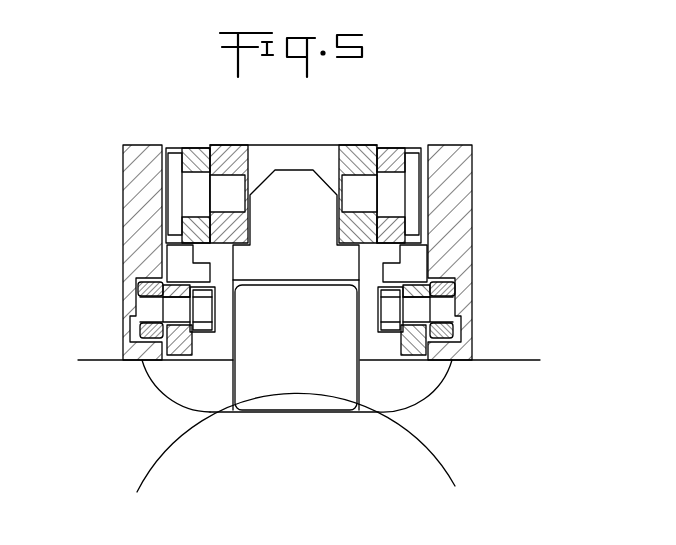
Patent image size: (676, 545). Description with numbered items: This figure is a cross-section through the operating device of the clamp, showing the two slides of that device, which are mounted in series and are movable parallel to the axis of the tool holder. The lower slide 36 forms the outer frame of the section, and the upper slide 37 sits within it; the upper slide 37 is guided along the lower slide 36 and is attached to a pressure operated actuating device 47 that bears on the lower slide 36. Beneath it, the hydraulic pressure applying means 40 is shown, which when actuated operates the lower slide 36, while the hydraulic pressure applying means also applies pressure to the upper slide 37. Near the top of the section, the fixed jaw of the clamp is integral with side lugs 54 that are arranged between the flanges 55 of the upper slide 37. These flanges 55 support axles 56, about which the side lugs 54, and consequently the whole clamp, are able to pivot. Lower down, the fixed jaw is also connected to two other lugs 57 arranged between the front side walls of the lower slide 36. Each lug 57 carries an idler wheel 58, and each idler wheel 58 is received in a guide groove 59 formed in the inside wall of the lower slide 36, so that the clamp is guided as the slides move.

The lower slide 36 is at (140, 268).
The upper slide 37 is at (177, 256).
The hydraulic pressure applying means 40 is at (296, 347).
The pressure operated actuating device 47 is at (296, 225).
The side lugs 54 is at (227, 153).
The flanges 55 is at (193, 155).
The axles 56 is at (197, 193).
The lugs 57 is at (180, 348).
The idler wheel 58 is at (147, 337).
The guide groove 59 is at (128, 300).